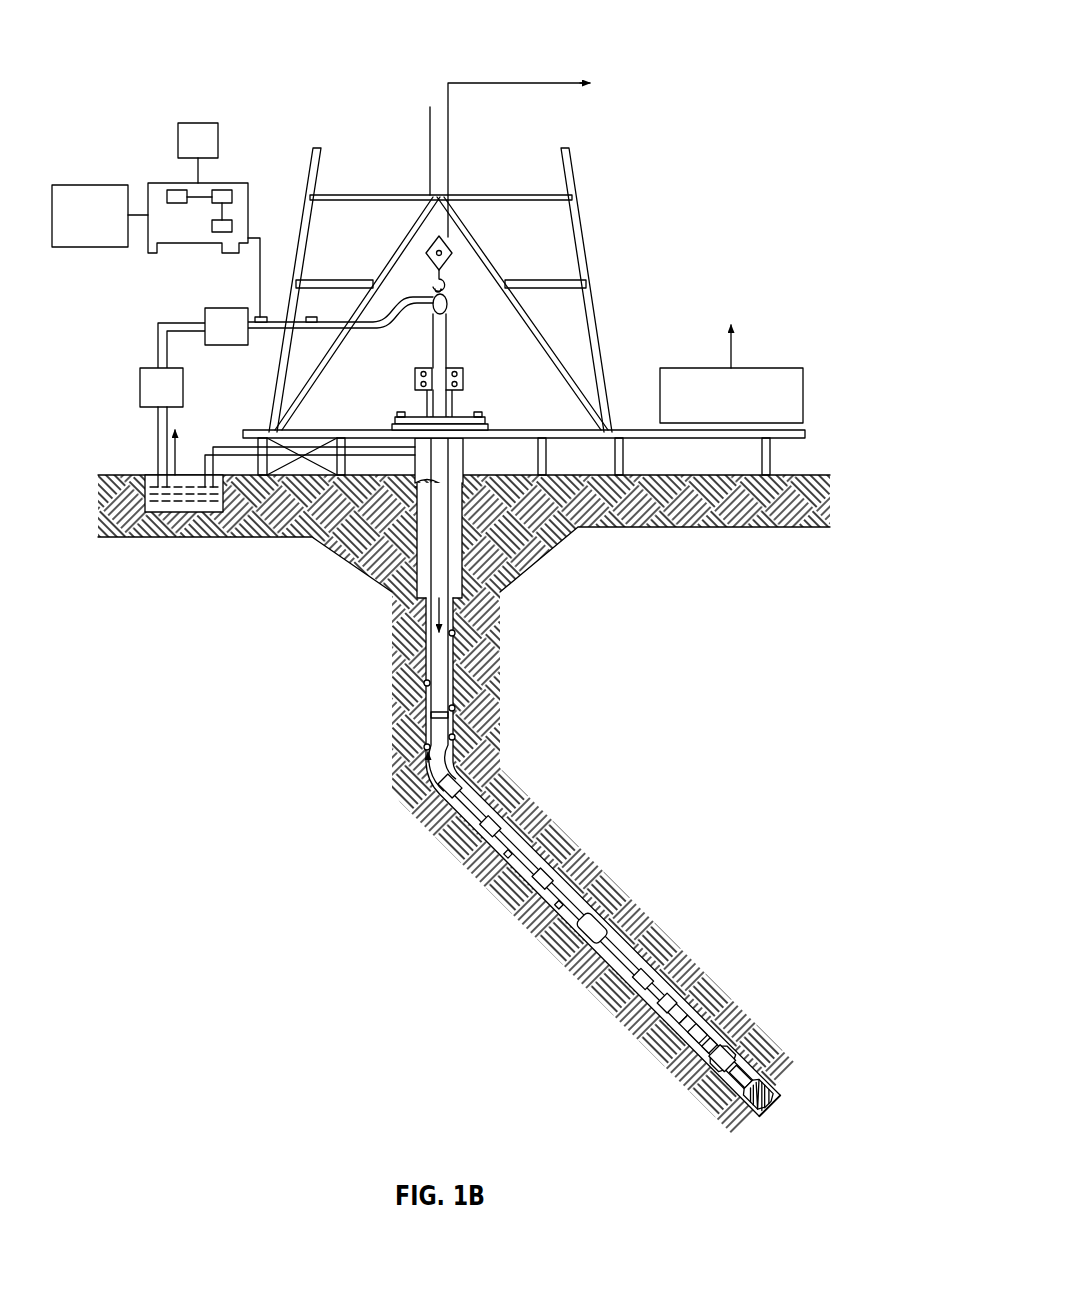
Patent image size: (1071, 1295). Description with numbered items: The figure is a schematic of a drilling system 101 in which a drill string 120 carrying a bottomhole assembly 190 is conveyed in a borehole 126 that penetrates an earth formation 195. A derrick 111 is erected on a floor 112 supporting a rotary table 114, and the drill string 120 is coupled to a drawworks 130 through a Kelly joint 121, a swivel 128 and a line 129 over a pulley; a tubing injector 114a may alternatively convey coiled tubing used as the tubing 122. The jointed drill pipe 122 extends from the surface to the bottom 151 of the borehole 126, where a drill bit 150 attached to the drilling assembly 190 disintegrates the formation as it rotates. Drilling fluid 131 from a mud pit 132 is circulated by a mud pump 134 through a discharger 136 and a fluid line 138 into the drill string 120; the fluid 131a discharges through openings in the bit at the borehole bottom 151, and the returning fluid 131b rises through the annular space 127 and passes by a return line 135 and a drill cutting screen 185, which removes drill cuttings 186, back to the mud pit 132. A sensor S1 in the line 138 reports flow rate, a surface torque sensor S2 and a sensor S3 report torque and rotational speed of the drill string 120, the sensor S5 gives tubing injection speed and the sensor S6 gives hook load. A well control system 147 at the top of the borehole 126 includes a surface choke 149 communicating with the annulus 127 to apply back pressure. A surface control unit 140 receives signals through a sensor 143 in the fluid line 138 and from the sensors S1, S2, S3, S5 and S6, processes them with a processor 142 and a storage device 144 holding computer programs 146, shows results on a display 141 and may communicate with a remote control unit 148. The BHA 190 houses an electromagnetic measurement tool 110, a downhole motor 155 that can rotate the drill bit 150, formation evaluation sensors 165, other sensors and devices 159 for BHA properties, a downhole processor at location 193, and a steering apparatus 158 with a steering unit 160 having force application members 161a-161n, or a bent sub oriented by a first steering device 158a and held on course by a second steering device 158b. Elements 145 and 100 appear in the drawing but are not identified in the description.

The electromagnetic measurement tool 110 is at (130, 48).
The drilling system 101 is at (745, 50).
The display/monitor 141 is at (192, 122).
The surface control unit 140 is at (182, 182).
The remote control unit 148 is at (110, 185).
The processor 142 is at (172, 190).
The storage device 144 is at (225, 190).
The computer programs 146 is at (220, 232).
The sensor 143 is at (258, 316).
The discharger 136 is at (205, 315).
The fluid line 138 is at (262, 334).
The mud pump 134 is at (140, 385).
The mud pit 132 is at (167, 506).
The drilling fluid 131 is at (150, 512).
The drill cutting screen 185 is at (290, 428).
The return line 135 is at (362, 455).
The drilling fluid from the drilling tubular 131a is at (387, 588).
The jointed drill pipe 122 is at (422, 663).
The line 129 is at (450, 170).
The derrick 111 is at (592, 300).
The platform or floor 112 is at (608, 428).
The drawworks 130 is at (765, 368).
The flow rate sensor S1 is at (310, 318).
The hook load sensor S6 is at (453, 287).
The tubing injection speed sensor S5 is at (448, 328).
The swivel 128 is at (431, 318).
The Kelly joint 121 is at (448, 356).
The tubing injector 114a is at (463, 376).
The rotary table 114 is at (473, 412).
The well control system 147 is at (397, 376).
The rotational speed sensor S3 is at (393, 415).
The wellhead 145 is at (463, 475).
The surface torque sensor S2 is at (525, 440).
The surface choke 149 is at (466, 490).
The drill cuttings 186 is at (455, 632).
The drill string 120 is at (455, 690).
The borehole 126 is at (458, 748).
The annular space 127 is at (483, 790).
The returning drilling fluid 131b is at (425, 780).
The downhole motor 155 is at (528, 842).
The bottomhole assembly 190 is at (652, 833).
The earth formation 195 is at (750, 895).
The drilling assembly 100 is at (683, 995).
The force application members 161a-161n is at (740, 1025).
The steering apparatus 158 is at (742, 1030).
The sensors and devices 159 is at (768, 1052).
The drill bit 150 is at (773, 1078).
The steering unit 160 is at (690, 1075).
The second steering device 158b is at (705, 1097).
The first steering device 158a is at (722, 1065).
The borehole bottom 151 is at (738, 1128).
The formation evaluation sensors 165 is at (602, 1005).
The downhole processor location 193 is at (573, 957).